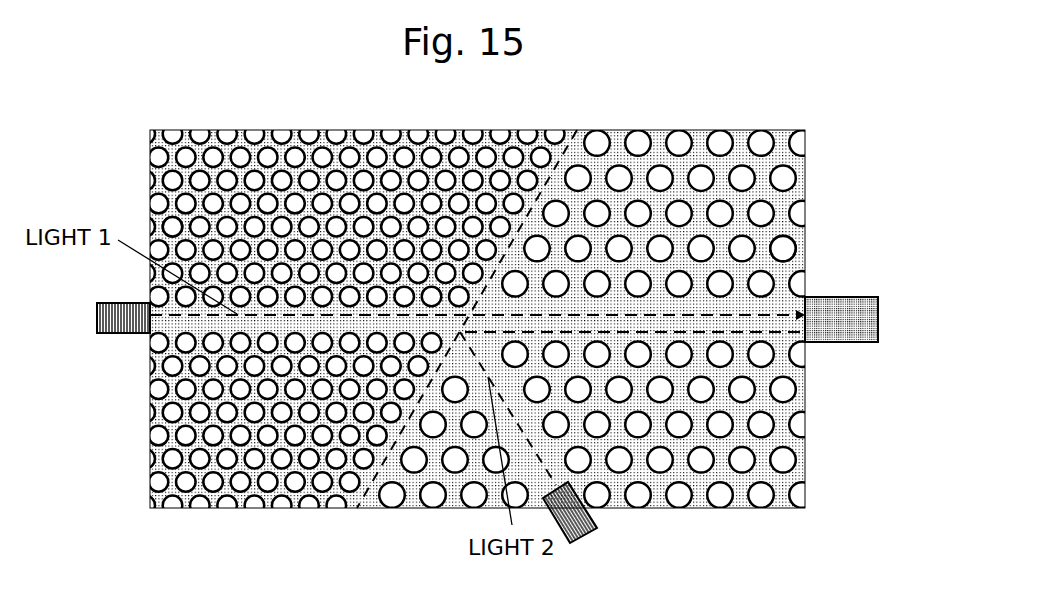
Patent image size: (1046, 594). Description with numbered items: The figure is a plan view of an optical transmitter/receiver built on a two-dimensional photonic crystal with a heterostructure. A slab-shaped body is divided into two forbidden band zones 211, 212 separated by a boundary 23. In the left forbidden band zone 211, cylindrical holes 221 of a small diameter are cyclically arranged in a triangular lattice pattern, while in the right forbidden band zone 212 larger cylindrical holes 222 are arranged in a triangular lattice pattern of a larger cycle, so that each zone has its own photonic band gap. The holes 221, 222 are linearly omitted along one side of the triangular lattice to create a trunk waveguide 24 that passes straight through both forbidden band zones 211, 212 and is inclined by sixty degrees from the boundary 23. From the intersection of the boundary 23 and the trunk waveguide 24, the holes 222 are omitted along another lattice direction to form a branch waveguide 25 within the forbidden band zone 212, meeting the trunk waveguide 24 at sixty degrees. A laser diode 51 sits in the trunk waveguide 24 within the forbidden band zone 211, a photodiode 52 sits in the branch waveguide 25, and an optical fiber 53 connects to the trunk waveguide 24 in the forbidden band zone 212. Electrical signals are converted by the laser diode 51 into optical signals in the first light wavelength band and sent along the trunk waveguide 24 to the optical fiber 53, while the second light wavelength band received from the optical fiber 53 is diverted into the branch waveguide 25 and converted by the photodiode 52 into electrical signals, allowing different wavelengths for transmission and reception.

The forbidden band zone 211 is at (594, 127).
The forbidden band zone 212 is at (805, 118).
The cylindrical holes 221 is at (172, 224).
The cylindrical holes 222 is at (787, 245).
The boundary 23 is at (377, 470).
The trunk waveguide 24 is at (755, 310).
The branch waveguide 25 is at (540, 420).
The laser diode 51 is at (115, 322).
The photodiode 52 is at (573, 520).
The optical fiber 53 is at (833, 327).